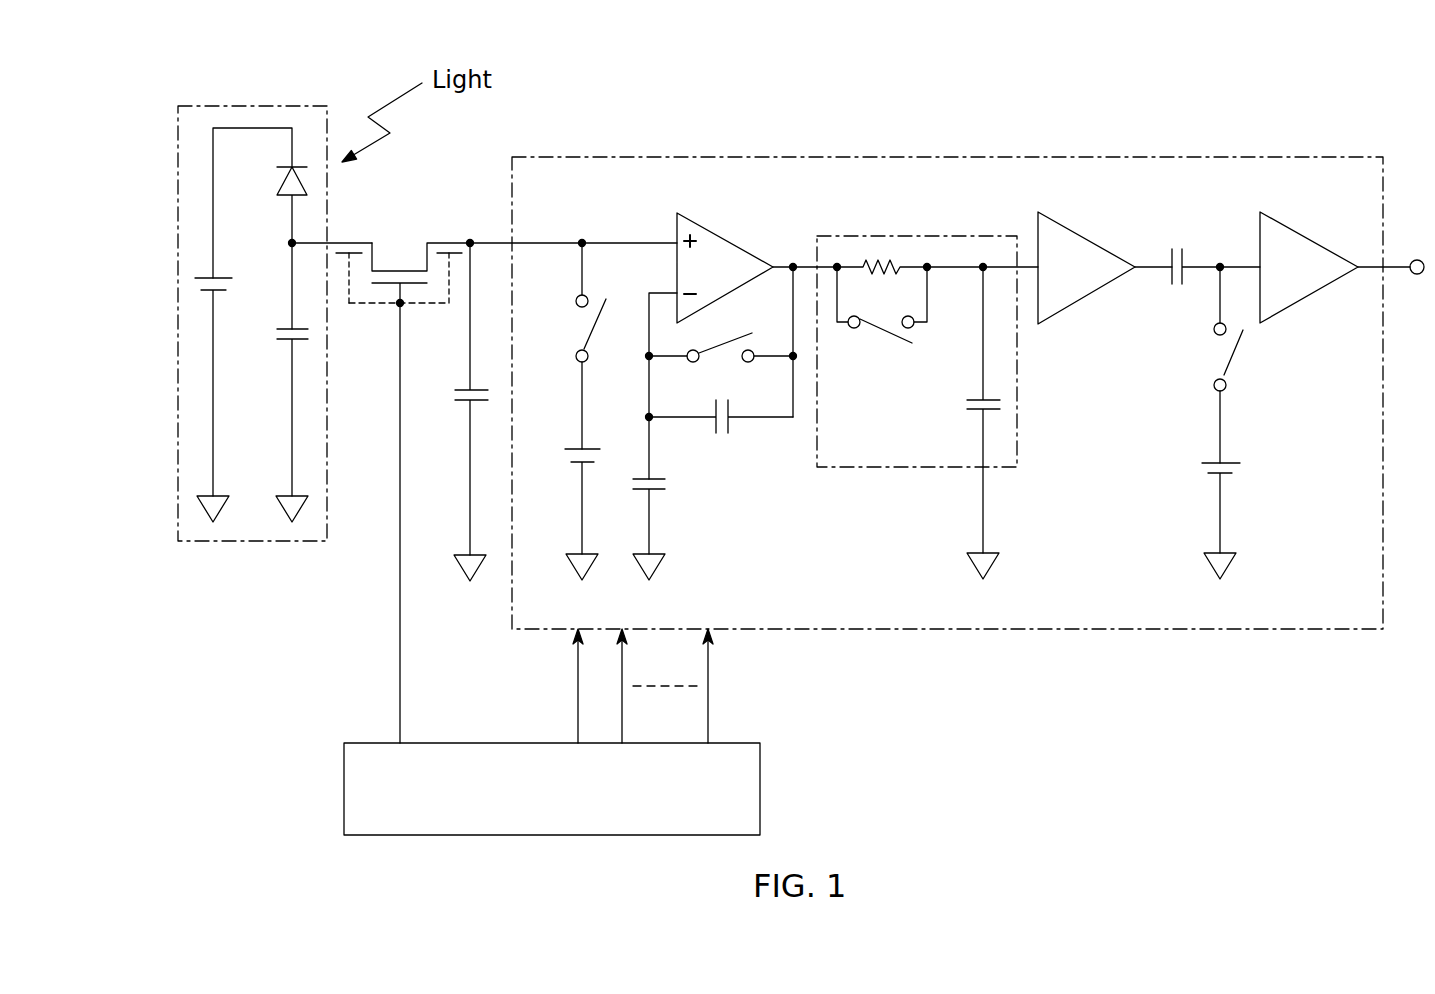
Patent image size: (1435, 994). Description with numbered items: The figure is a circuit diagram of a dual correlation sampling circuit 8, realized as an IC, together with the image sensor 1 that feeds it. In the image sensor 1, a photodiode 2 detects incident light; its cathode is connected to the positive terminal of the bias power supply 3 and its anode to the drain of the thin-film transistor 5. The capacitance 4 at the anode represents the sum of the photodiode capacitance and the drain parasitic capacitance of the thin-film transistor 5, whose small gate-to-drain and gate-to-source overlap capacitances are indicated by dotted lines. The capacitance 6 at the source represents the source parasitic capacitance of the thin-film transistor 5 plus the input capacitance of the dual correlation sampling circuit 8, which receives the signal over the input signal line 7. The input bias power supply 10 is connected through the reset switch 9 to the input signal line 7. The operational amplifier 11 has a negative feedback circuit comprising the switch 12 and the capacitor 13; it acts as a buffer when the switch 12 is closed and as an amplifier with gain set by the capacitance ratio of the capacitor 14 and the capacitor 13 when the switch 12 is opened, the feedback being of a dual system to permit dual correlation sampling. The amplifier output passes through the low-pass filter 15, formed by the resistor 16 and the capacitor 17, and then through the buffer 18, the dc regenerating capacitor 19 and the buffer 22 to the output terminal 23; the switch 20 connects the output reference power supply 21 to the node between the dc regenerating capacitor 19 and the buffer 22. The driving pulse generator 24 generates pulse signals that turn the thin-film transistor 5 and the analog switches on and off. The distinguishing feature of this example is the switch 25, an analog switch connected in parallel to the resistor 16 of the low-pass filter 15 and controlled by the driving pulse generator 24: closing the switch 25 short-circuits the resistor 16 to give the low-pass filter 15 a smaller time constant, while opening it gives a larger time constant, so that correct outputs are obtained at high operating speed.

The image sensor 1 is at (228, 105).
The photodiode 2 is at (278, 178).
The bias power supply 3 is at (232, 284).
The capacitance 4 is at (272, 338).
The thin-film transistor 5 is at (400, 262).
The capacitance 6 is at (455, 394).
The input signal line 7 is at (543, 243).
The dual correlation sampling circuit 8 is at (849, 630).
The reset switch 9 is at (578, 322).
The input bias power supply 10 is at (568, 455).
The operational amplifier 11 is at (741, 250).
The switch 12 is at (755, 346).
The capacitor 13 is at (732, 428).
The capacitor 14 is at (668, 487).
The low-pass filter 15 is at (830, 236).
The resistor 16 is at (887, 258).
The capacitor 17 is at (967, 403).
The buffer 18 is at (1080, 300).
The dc regenerating capacitor 19 is at (1175, 247).
The switch 20 is at (1210, 360).
The output reference power supply 21 is at (1245, 465).
The buffer 22 is at (1305, 300).
The output terminal 23 is at (1417, 260).
The driving pulse generator 24 is at (344, 795).
The switch 25 is at (880, 342).